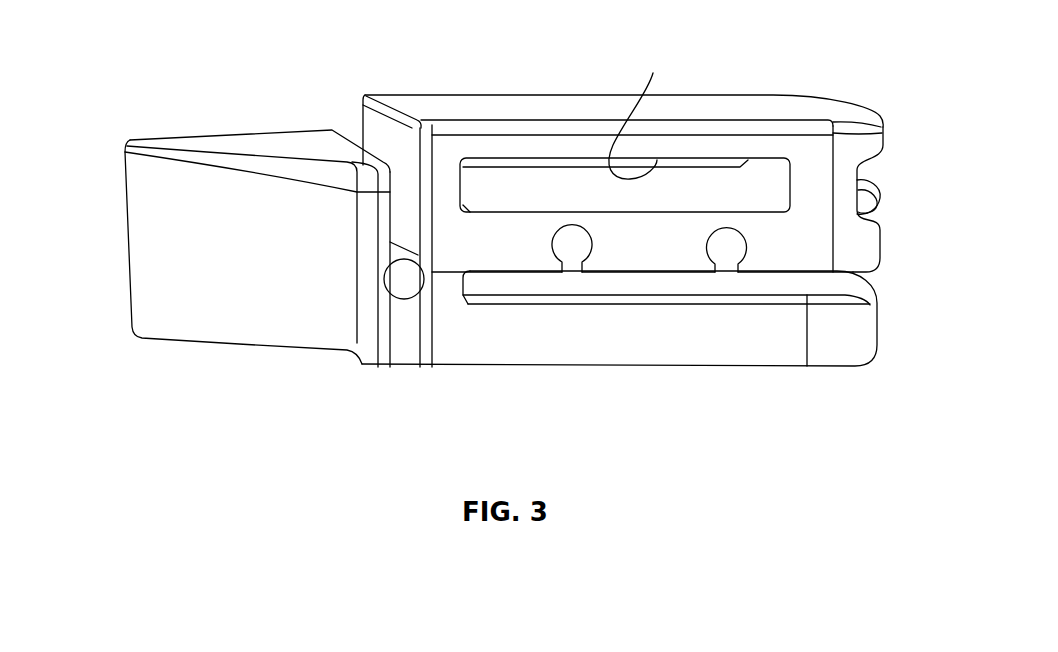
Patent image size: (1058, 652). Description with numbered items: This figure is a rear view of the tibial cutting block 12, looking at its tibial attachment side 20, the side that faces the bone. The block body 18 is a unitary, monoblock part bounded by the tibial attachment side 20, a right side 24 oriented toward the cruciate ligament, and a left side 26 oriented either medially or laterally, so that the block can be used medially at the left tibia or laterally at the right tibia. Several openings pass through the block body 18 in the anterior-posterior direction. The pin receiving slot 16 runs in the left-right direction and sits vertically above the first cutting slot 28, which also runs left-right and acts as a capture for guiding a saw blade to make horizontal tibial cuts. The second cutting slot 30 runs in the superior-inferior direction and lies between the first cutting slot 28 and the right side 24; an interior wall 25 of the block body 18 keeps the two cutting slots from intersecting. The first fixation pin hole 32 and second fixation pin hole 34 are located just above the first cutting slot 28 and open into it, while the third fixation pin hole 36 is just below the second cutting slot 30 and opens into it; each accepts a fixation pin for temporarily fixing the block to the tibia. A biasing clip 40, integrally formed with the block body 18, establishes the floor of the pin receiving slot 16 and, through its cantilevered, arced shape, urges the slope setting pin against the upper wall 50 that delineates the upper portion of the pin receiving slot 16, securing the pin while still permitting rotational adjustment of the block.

The tibial cutting block 12 is at (766, 58).
The pin receiving slot 16 is at (520, 182).
The block body 18 is at (472, 126).
The tibial attachment side 20 is at (447, 278).
The right side 24 is at (113, 238).
The interior wall 25 is at (449, 168).
The left side 26 is at (893, 234).
The first cutting slot 28 is at (662, 288).
The second cutting slot 30 is at (401, 177).
The first fixation pin hole 32 is at (722, 252).
The second fixation pin hole 34 is at (570, 250).
The third fixation pin hole 36 is at (400, 282).
The biasing clip 40 is at (863, 193).
The upper wall 50 is at (639, 112).